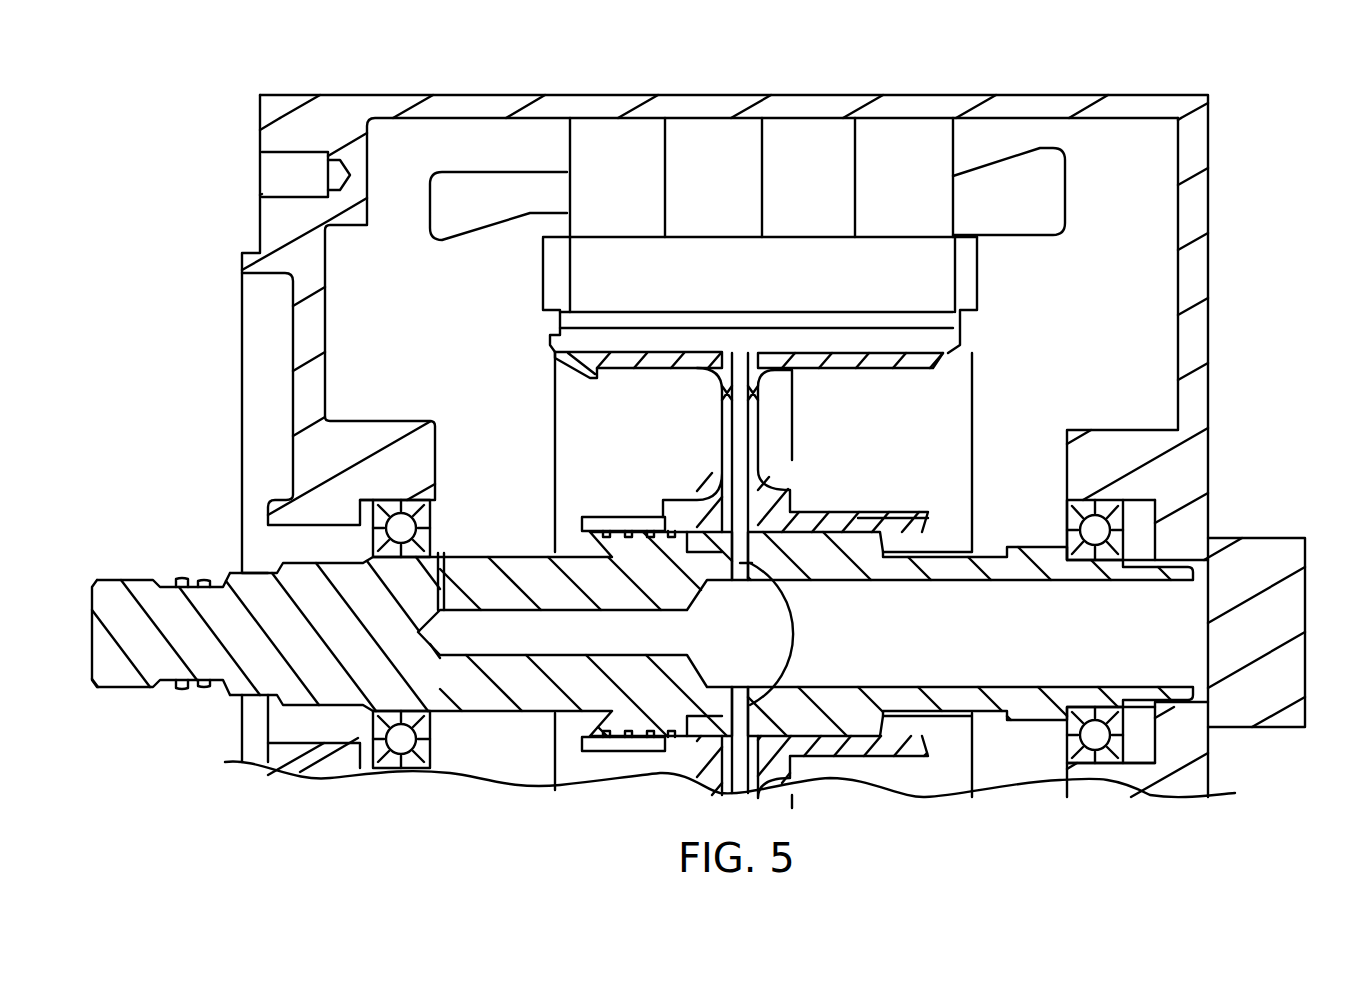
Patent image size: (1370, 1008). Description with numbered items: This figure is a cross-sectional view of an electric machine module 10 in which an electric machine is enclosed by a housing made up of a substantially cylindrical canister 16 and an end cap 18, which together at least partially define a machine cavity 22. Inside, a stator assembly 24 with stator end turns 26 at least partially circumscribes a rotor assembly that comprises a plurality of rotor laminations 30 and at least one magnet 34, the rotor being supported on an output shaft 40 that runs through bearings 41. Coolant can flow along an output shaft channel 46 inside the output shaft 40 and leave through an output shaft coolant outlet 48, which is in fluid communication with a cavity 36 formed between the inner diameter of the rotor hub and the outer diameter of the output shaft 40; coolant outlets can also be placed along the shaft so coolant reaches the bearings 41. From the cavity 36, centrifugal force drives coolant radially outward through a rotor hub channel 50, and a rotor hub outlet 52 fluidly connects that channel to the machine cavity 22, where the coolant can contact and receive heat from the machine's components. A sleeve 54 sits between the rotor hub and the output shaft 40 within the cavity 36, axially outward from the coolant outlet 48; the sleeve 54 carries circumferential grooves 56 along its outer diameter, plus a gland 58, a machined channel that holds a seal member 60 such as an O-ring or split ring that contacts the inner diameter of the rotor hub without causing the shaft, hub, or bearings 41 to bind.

The electric machine module 10 is at (1283, 103).
The canister 16 is at (1212, 118).
The end cap 18 is at (262, 104).
The machine cavity 22 is at (1129, 230).
The stator assembly 24 is at (707, 158).
The stator end turns 26 is at (456, 185).
The rotor laminations 30 is at (793, 265).
The magnet 34 is at (873, 322).
The cavity 36 is at (800, 518).
The output shaft 40 is at (135, 650).
The bearings 41 is at (400, 524).
The output shaft channel 46 is at (1170, 612).
The output shaft coolant outlet 48 is at (440, 590).
The rotor hub channel 50 is at (736, 465).
The rotor hub outlet 52 is at (722, 392).
The sleeve 54 is at (600, 545).
The groove 56 is at (650, 530).
The gland 58 is at (705, 530).
The seal member 60 is at (741, 565).